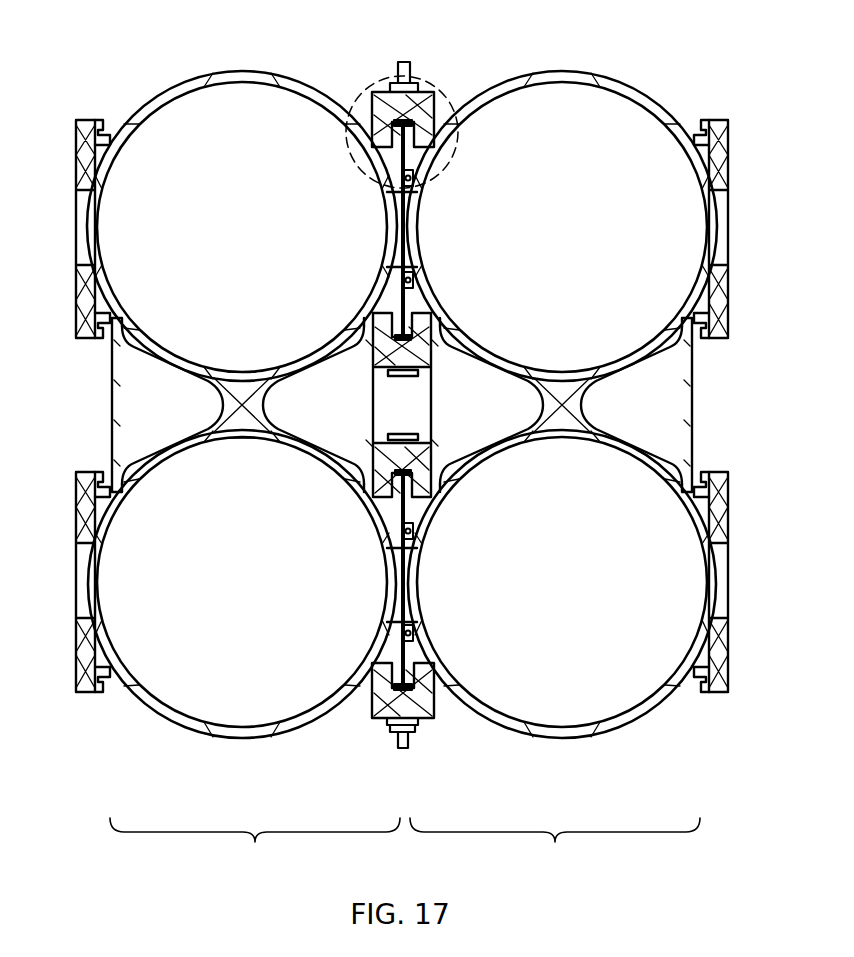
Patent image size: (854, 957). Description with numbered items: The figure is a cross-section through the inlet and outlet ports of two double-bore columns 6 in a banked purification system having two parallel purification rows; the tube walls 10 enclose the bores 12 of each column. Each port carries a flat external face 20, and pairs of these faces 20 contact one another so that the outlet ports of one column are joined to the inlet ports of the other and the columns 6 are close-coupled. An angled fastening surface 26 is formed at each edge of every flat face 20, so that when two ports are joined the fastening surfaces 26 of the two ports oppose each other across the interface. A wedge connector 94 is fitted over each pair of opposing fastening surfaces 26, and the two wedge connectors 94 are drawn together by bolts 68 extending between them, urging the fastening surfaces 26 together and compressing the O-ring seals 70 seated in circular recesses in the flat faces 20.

The double-bore column 6 is at (405, 846).
The tube wall 10 is at (213, 79).
The tube cavity 12 is at (228, 242).
The flat external face 20 is at (76, 168).
The angled fastening surface 26 is at (400, 176).
The bolt 68 is at (410, 70).
The O-ring seal 70 is at (408, 262).
The wedge connector 94 is at (374, 98).